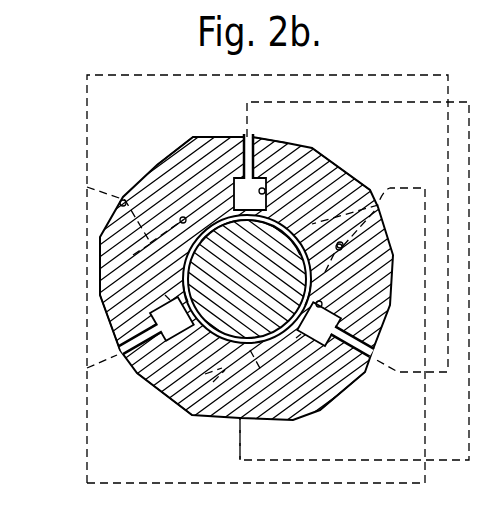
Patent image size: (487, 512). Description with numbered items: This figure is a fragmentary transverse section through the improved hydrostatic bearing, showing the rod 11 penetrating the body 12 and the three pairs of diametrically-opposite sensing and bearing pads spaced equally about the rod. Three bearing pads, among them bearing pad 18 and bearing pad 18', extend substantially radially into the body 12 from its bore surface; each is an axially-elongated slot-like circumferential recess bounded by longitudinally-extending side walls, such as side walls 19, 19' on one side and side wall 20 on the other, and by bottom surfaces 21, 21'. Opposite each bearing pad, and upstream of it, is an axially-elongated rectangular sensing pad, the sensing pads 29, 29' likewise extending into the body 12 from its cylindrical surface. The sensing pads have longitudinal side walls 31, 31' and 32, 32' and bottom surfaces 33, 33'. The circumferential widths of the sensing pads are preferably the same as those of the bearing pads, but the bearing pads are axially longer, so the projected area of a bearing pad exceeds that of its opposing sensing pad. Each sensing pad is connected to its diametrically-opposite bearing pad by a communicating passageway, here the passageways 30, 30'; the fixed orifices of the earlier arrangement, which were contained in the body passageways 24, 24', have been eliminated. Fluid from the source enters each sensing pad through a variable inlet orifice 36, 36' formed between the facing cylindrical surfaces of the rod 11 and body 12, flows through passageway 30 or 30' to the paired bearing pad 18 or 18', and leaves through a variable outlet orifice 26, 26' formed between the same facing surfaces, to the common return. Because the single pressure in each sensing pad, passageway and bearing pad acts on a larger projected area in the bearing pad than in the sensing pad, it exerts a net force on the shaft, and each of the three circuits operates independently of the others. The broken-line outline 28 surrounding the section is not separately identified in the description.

The rod 11 is at (318, 156).
The body 12 is at (120, 384).
The bearing pad 18 is at (238, 358).
The bearing pad 18' is at (169, 236).
The side wall 19 is at (198, 375).
The side wall 19' is at (190, 203).
The side wall 20 is at (275, 379).
The bottom surface 21 is at (208, 389).
The bottom surface 21' is at (139, 197).
The body passageway 24 is at (262, 438).
The body passageway 24' is at (118, 257).
The variable outlet orifice 26 is at (247, 279).
The variable outlet orifice 26' is at (216, 248).
The outer frame 28 is at (428, 62).
The sensing pad 29 is at (250, 194).
The sensing pad 29' is at (319, 324).
The passageway 30 is at (269, 142).
The passageway 30' is at (360, 368).
The longitudinal side wall 31 is at (281, 179).
The longitudinal side wall 31' is at (280, 349).
The longitudinal side wall 32 is at (188, 154).
The longitudinal side wall 32' is at (343, 296).
The bottom surface 33 is at (269, 151).
The bottom surface 33' is at (339, 383).
The variable inlet orifice 36 is at (247, 279).
The variable inlet orifice 36' is at (292, 292).